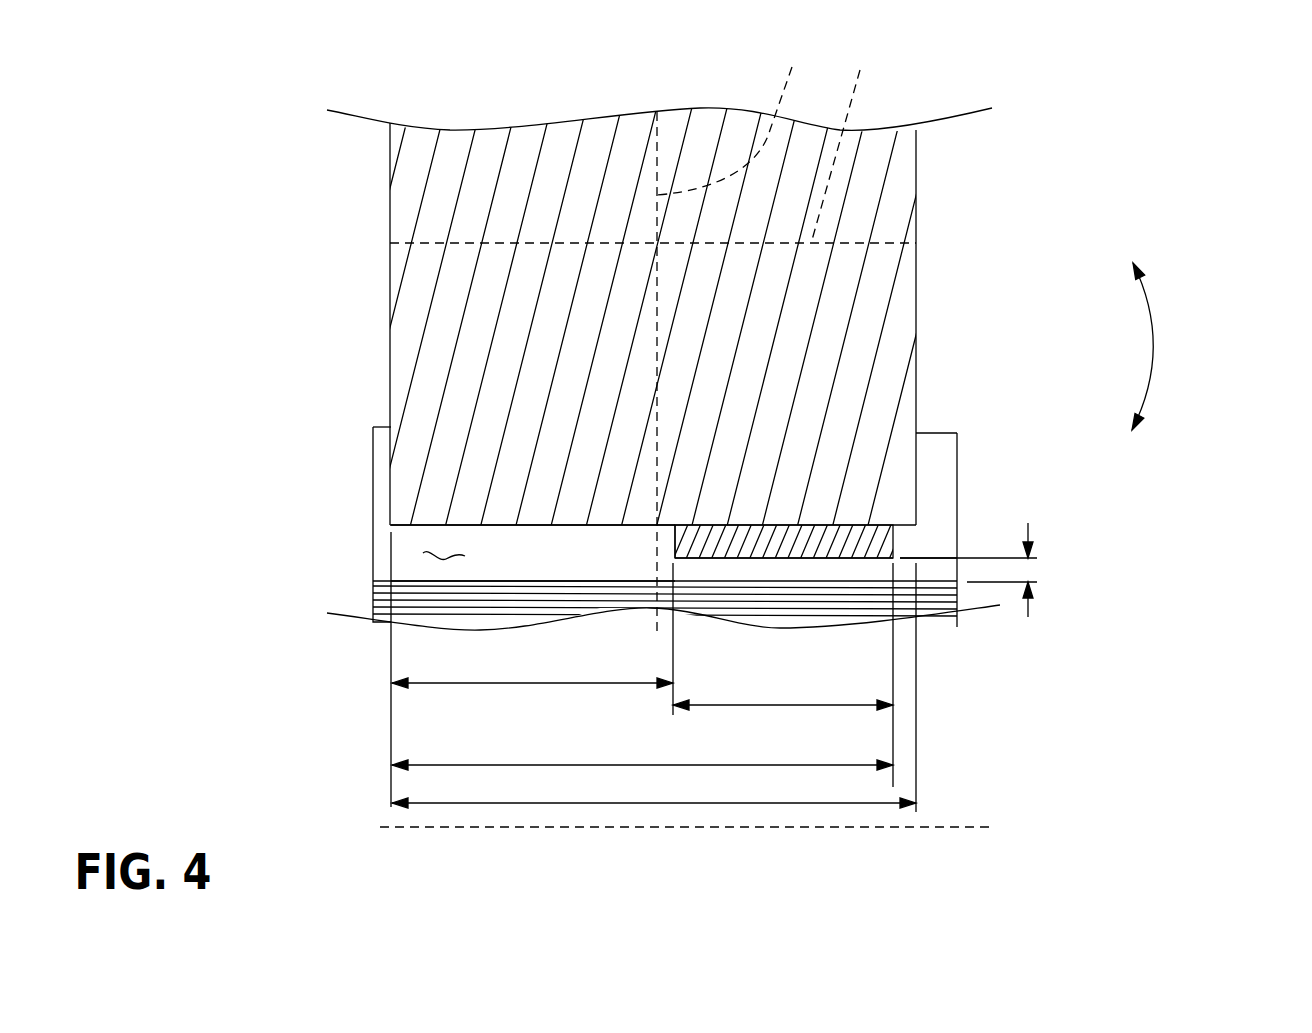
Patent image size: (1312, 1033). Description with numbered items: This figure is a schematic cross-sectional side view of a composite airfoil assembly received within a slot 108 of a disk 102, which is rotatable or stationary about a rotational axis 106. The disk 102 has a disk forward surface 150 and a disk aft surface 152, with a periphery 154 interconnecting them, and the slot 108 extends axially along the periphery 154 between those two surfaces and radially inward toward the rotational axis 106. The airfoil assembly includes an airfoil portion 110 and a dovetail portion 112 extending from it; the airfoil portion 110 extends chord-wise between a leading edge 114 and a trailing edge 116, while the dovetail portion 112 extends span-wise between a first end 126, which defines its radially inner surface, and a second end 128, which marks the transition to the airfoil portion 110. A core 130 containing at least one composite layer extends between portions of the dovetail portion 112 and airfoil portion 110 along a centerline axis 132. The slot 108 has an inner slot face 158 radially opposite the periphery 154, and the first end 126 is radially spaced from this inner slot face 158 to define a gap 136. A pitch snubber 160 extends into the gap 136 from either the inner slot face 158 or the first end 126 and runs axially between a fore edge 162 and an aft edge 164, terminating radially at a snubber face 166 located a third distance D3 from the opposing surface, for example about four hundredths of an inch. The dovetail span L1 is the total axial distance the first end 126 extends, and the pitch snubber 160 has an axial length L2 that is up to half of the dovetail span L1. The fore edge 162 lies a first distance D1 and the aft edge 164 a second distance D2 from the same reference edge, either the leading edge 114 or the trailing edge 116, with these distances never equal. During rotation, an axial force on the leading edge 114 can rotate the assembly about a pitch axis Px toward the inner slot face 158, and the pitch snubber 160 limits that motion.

The disk 102 is at (373, 598).
The rotational axis 106 is at (383, 822).
The slot 108 is at (928, 432).
The airfoil portion 110 is at (600, 112).
The dovetail portion 112 is at (390, 271).
The leading edge 114 is at (390, 179).
The trailing edge 116 is at (916, 193).
The first end 126 is at (502, 525).
The second end 128 is at (849, 142).
The core 130 is at (916, 265).
The centerline axis 132 is at (738, 335).
The gap 136 is at (440, 547).
The disk forward surface 150 is at (372, 477).
The disk aft surface 152 is at (957, 442).
The periphery 154 is at (382, 425).
The inner slot face 158 is at (400, 577).
The pitch snubber 160 is at (893, 523).
The fore edge 162 is at (673, 527).
The aft edge 164 is at (900, 542).
The snubber face 166 is at (787, 560).
The first distance D1 is at (425, 683).
The second distance D2 is at (845, 765).
The third distance D3 is at (1028, 570).
The dovetail span L1 is at (870, 803).
The axial length L2 is at (850, 702).
The pitch axis Px is at (1153, 338).